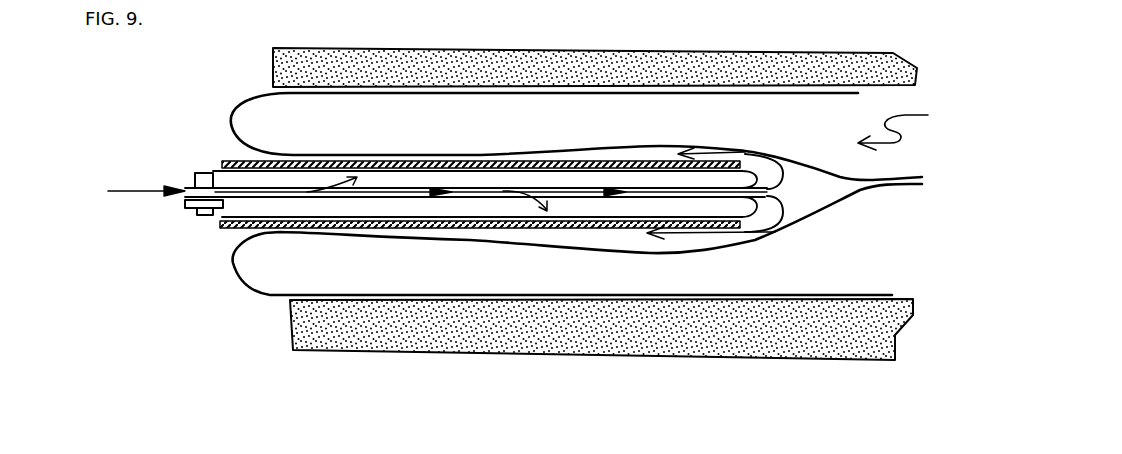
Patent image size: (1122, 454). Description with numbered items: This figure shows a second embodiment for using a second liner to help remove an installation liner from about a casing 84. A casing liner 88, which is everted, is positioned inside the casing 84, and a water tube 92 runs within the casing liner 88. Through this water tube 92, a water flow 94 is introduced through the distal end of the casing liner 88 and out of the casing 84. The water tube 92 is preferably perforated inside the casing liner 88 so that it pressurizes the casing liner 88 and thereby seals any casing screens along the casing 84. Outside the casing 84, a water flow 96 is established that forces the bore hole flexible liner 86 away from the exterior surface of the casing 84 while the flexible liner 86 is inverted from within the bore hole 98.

The casing 84 is at (270, 228).
The bore hole flexible liner 86 is at (230, 122).
The casing liner 88 is at (211, 172).
The water tube 92 is at (250, 188).
The water flow 94 is at (134, 188).
The water flow 96 is at (781, 171).
The bore hole 98 is at (906, 128).